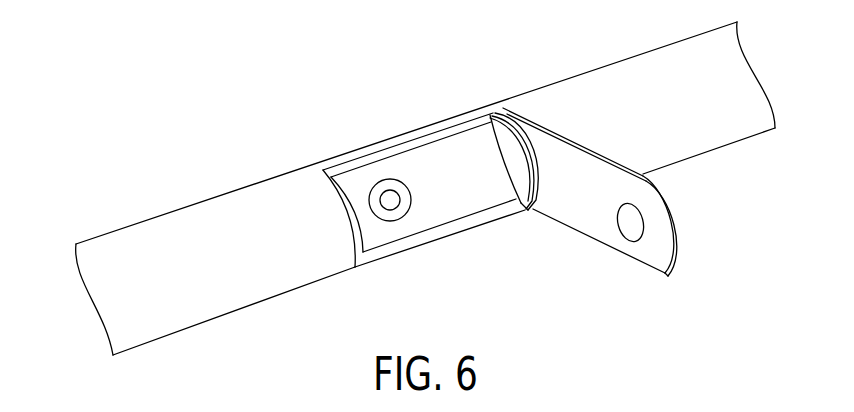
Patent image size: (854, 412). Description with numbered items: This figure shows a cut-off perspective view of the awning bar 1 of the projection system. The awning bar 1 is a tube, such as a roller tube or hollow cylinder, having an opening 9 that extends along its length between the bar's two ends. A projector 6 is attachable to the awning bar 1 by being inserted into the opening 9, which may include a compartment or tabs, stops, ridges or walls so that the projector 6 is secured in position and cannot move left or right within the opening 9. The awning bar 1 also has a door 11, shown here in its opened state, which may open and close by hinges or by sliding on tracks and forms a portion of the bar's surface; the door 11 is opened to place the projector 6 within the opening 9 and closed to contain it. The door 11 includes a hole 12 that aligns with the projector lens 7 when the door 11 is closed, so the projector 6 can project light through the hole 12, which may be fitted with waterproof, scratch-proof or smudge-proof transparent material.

The awning bar 1 is at (173, 224).
The projector 6 is at (420, 160).
The projector lens 7 is at (390, 220).
The opening 9 is at (504, 141).
The door 11 is at (578, 163).
The hole 12 is at (630, 228).